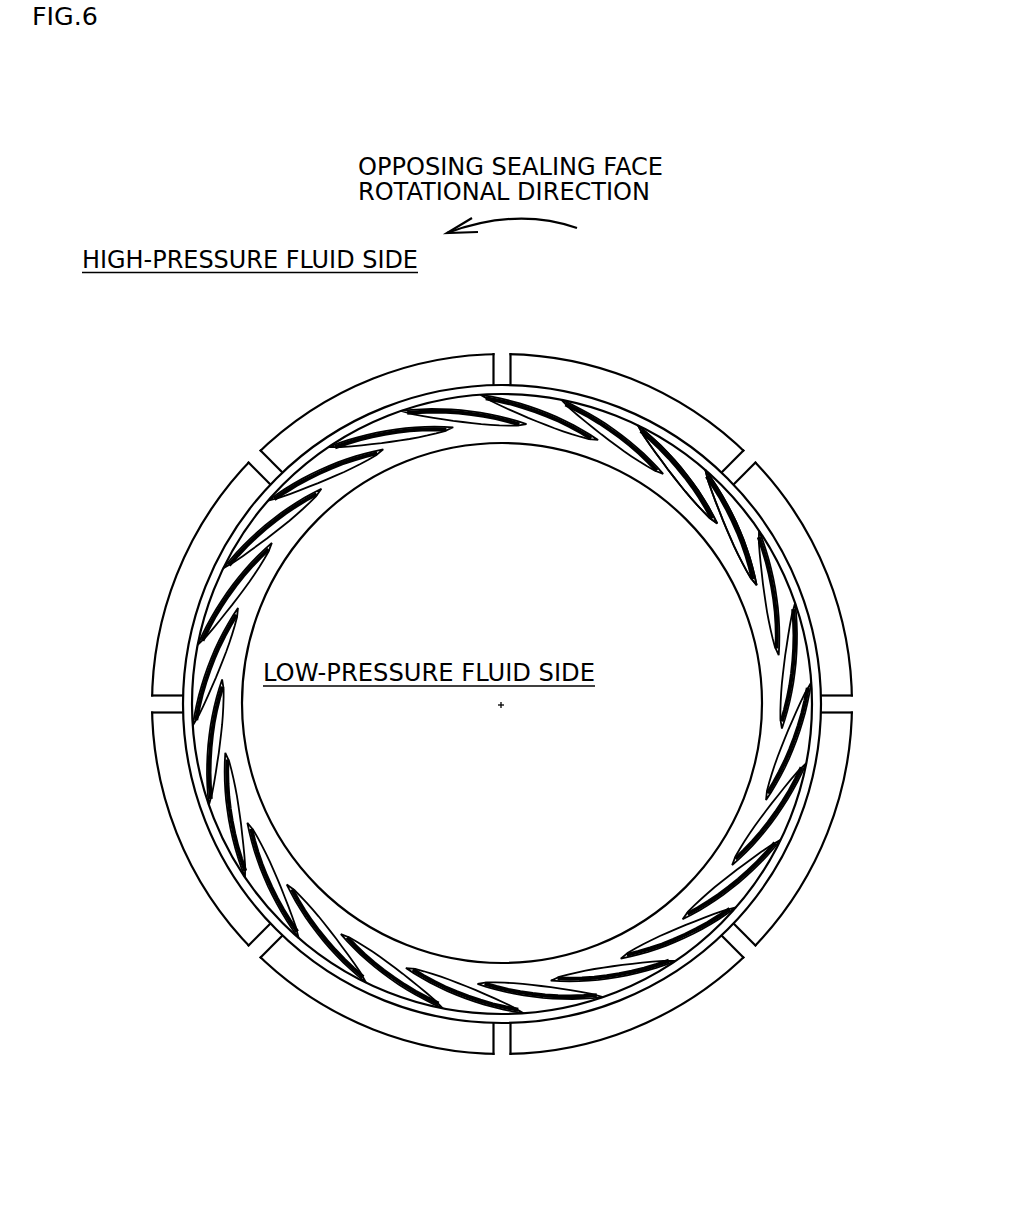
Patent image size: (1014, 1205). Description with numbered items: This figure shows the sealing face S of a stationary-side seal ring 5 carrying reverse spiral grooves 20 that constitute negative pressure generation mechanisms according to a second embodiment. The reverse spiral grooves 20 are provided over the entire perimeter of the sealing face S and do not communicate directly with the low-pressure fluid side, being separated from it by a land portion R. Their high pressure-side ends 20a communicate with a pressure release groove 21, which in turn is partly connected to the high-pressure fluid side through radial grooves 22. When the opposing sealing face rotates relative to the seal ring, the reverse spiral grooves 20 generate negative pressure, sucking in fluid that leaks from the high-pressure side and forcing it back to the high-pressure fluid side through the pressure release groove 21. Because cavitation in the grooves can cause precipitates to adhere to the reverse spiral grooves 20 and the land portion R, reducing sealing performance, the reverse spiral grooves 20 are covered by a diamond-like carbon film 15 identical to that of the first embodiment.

The stationary-side seal ring 5 is at (403, 364).
The sealing face S is at (217, 514).
The radial grooves 22 is at (505, 350).
The pressure release groove 21 is at (551, 388).
The land portion R is at (700, 433).
The reverse spiral grooves 20 is at (382, 436).
The high pressure-side ends 20a is at (350, 445).
The diamond-like carbon film 15 is at (417, 432).